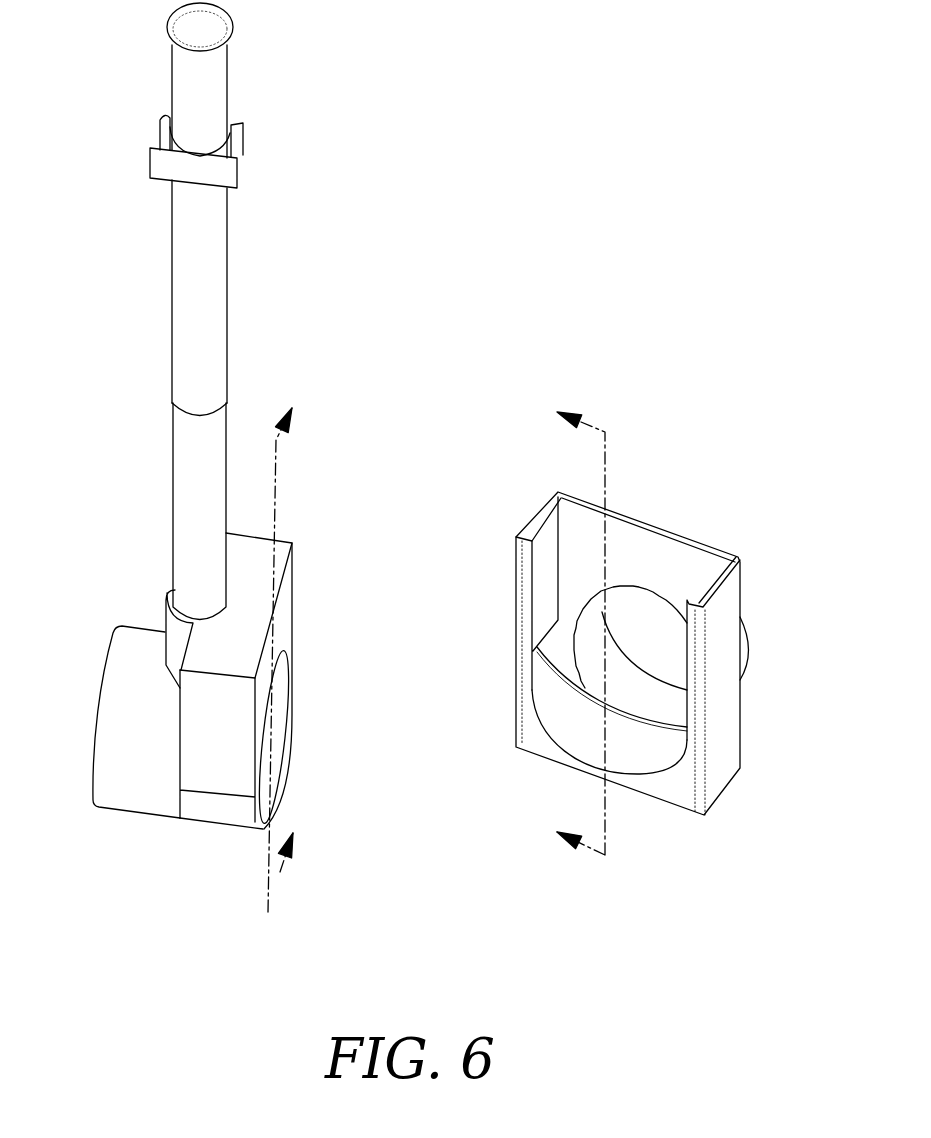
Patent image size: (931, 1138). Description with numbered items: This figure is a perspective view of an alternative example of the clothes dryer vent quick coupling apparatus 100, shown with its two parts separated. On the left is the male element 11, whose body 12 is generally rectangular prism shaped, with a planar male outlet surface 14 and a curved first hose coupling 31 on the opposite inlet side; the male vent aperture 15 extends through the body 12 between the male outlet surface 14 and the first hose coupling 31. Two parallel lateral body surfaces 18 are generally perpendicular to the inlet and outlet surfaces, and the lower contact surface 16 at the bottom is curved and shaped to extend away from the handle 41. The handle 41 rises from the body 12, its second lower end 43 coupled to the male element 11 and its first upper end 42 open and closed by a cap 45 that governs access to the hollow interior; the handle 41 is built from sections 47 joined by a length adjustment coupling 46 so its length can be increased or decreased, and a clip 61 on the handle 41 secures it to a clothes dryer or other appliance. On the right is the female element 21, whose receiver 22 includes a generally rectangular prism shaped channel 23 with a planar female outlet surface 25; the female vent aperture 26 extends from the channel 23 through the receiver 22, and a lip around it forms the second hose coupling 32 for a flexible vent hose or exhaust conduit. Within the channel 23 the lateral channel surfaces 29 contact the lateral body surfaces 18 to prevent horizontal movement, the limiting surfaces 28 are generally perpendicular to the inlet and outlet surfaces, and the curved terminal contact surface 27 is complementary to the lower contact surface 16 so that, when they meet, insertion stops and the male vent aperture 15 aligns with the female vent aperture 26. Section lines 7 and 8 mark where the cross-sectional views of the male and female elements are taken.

The clothes dryer vent quick coupling apparatus 100 is at (503, 153).
The male element 11 is at (346, 414).
The body 12 is at (215, 750).
The male outlet surface 14 is at (290, 628).
The male vent aperture 15 is at (288, 739).
The lower contact surface 16 is at (222, 836).
The lateral body surface 18 is at (193, 723).
The female element 21 is at (496, 427).
The receiver 22 is at (719, 738).
The channel 23 is at (621, 532).
The female outlet surface 25 is at (688, 560).
The female vent aperture 26 is at (614, 688).
The terminal contact surface 27 is at (623, 752).
The limiting surfaces 28 is at (722, 536).
The lateral channel surface 29 is at (540, 541).
The first hose coupling 31 is at (135, 718).
The second hose coupling 32 is at (754, 652).
The handle 41 is at (193, 330).
The first upper end 42 is at (150, 74).
The second lower end 43 is at (165, 575).
The cap 45 is at (200, 25).
The length adjustment coupling 46 is at (200, 410).
The section 47 is at (183, 290).
The clip 61 is at (190, 172).
The section line 7- 7 is at (290, 644).
The section line 8- 8 is at (560, 622).